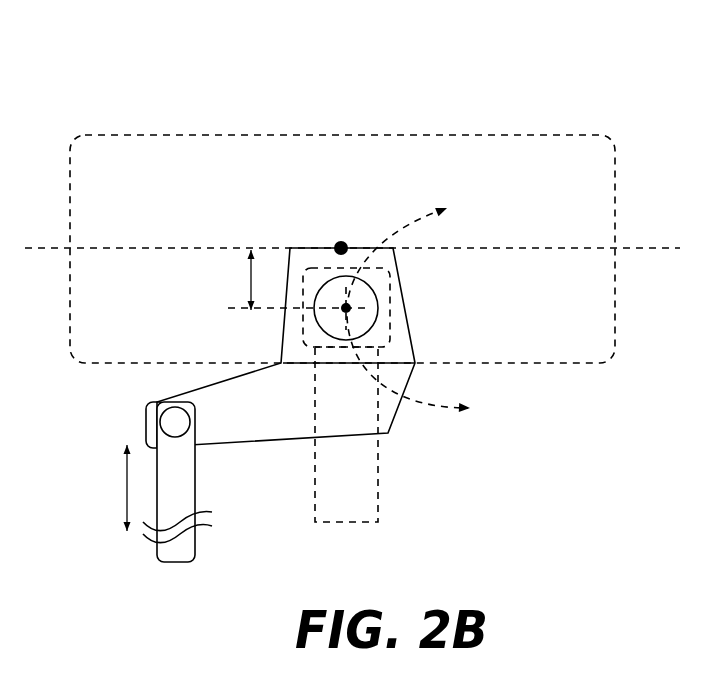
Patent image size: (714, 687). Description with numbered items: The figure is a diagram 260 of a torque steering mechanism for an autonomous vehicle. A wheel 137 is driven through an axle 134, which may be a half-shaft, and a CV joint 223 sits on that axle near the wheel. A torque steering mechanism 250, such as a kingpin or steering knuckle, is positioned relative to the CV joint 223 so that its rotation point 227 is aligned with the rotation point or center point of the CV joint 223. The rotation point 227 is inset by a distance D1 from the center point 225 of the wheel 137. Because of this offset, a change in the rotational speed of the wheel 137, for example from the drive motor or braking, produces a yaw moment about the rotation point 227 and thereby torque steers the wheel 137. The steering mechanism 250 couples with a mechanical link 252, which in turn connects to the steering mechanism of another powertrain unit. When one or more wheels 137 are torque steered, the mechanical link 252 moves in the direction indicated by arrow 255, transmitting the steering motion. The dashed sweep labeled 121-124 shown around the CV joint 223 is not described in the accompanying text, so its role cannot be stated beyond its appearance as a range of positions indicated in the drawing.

The diagram 260 is at (100, 103).
The wheel 137 is at (570, 188).
The torque steering mechanism 250 is at (278, 417).
The mechanical link 252 is at (197, 490).
The arrow 255 is at (125, 483).
The distance D1 is at (249, 283).
The center point 225 is at (339, 239).
The CV joint 223 is at (390, 284).
The rotation point 227 is at (358, 309).
The field of view sweep 121-124 is at (417, 214).
The axle 134 is at (380, 487).